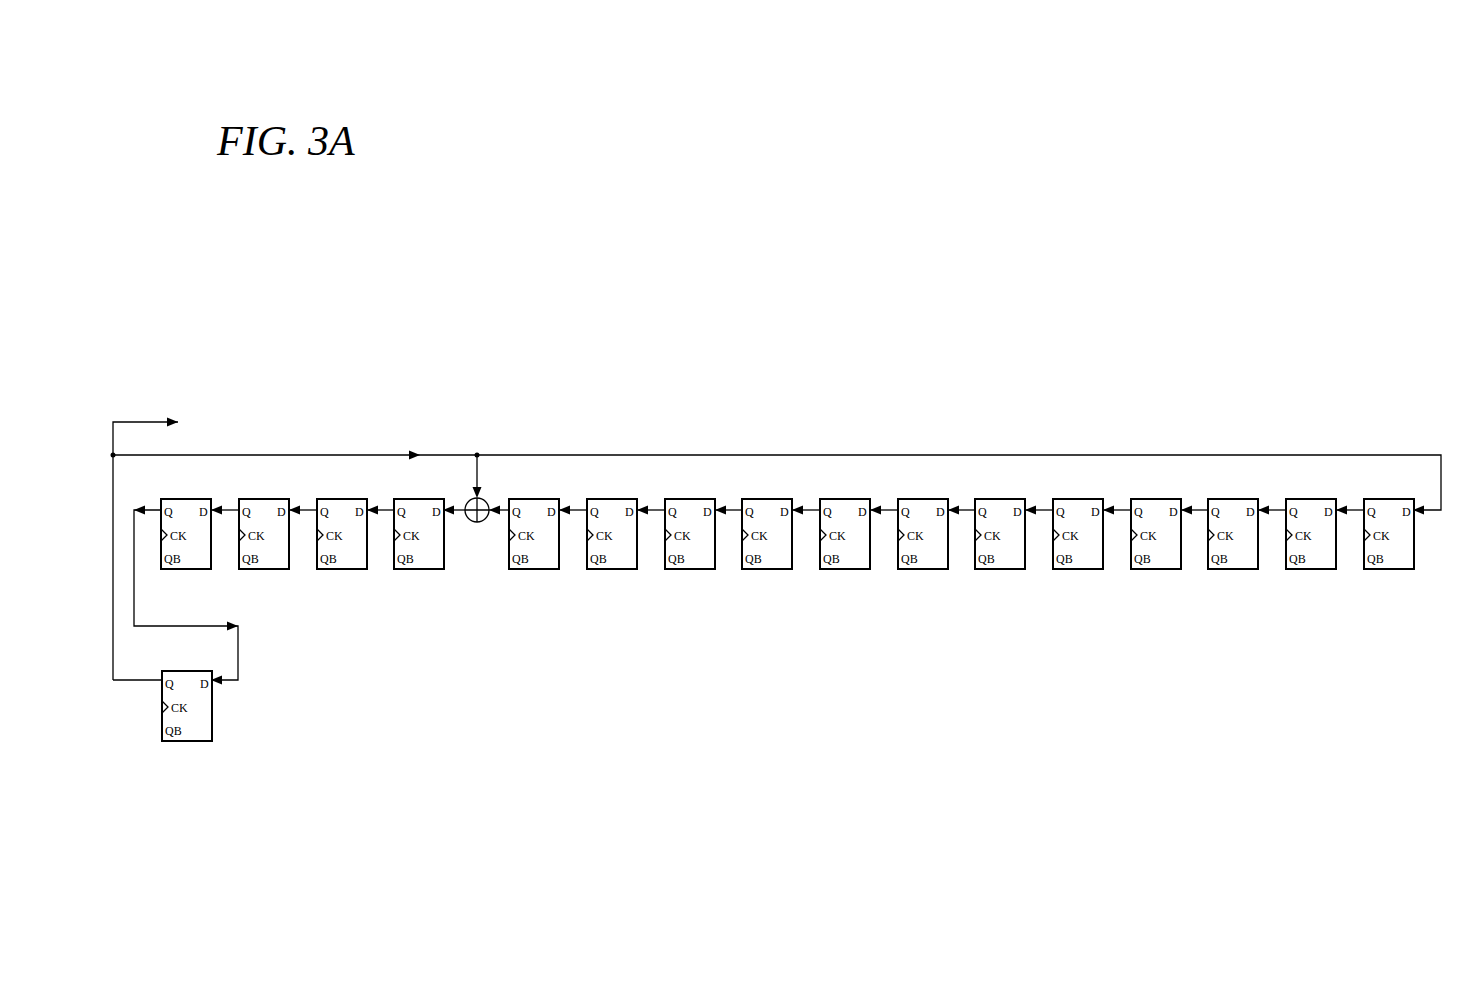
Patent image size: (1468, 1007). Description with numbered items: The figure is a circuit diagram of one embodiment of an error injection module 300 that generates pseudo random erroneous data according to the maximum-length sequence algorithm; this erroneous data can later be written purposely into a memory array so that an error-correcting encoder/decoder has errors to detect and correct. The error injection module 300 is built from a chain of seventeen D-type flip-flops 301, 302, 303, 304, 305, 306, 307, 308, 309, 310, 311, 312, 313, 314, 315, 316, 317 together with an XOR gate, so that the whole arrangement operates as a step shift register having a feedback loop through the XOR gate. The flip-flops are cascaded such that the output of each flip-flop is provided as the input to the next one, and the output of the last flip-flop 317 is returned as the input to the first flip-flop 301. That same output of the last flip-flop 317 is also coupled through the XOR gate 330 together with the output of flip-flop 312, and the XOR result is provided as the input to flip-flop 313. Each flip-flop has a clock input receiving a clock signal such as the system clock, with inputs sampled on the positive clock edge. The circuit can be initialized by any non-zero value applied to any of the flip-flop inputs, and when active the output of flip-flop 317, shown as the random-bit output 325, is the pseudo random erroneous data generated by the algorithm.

The error injection module 300 is at (404, 287).
The D-type flip-flop 301 is at (1389, 569).
The D-type flip-flop 302 is at (1311, 569).
The D-type flip-flop 303 is at (1233, 569).
The D-type flip-flop 304 is at (1156, 569).
The D-type flip-flop 305 is at (1078, 569).
The D-type flip-flop 306 is at (1000, 569).
The D-type flip-flop 307 is at (923, 569).
The D-type flip-flop 308 is at (845, 569).
The D-type flip-flop 309 is at (767, 569).
The D-type flip-flop 310 is at (690, 569).
The D-type flip-flop 311 is at (612, 569).
The D-type flip-flop 312 is at (534, 569).
The D-type flip-flop 313 is at (419, 569).
The D-type flip-flop 314 is at (342, 569).
The D-type flip-flop 315 is at (264, 569).
The D-type flip-flop 316 is at (186, 569).
The D-type flip-flop 317 is at (186, 741).
The random-bit output 325 is at (142, 396).
The XOR gate 330 is at (484, 498).